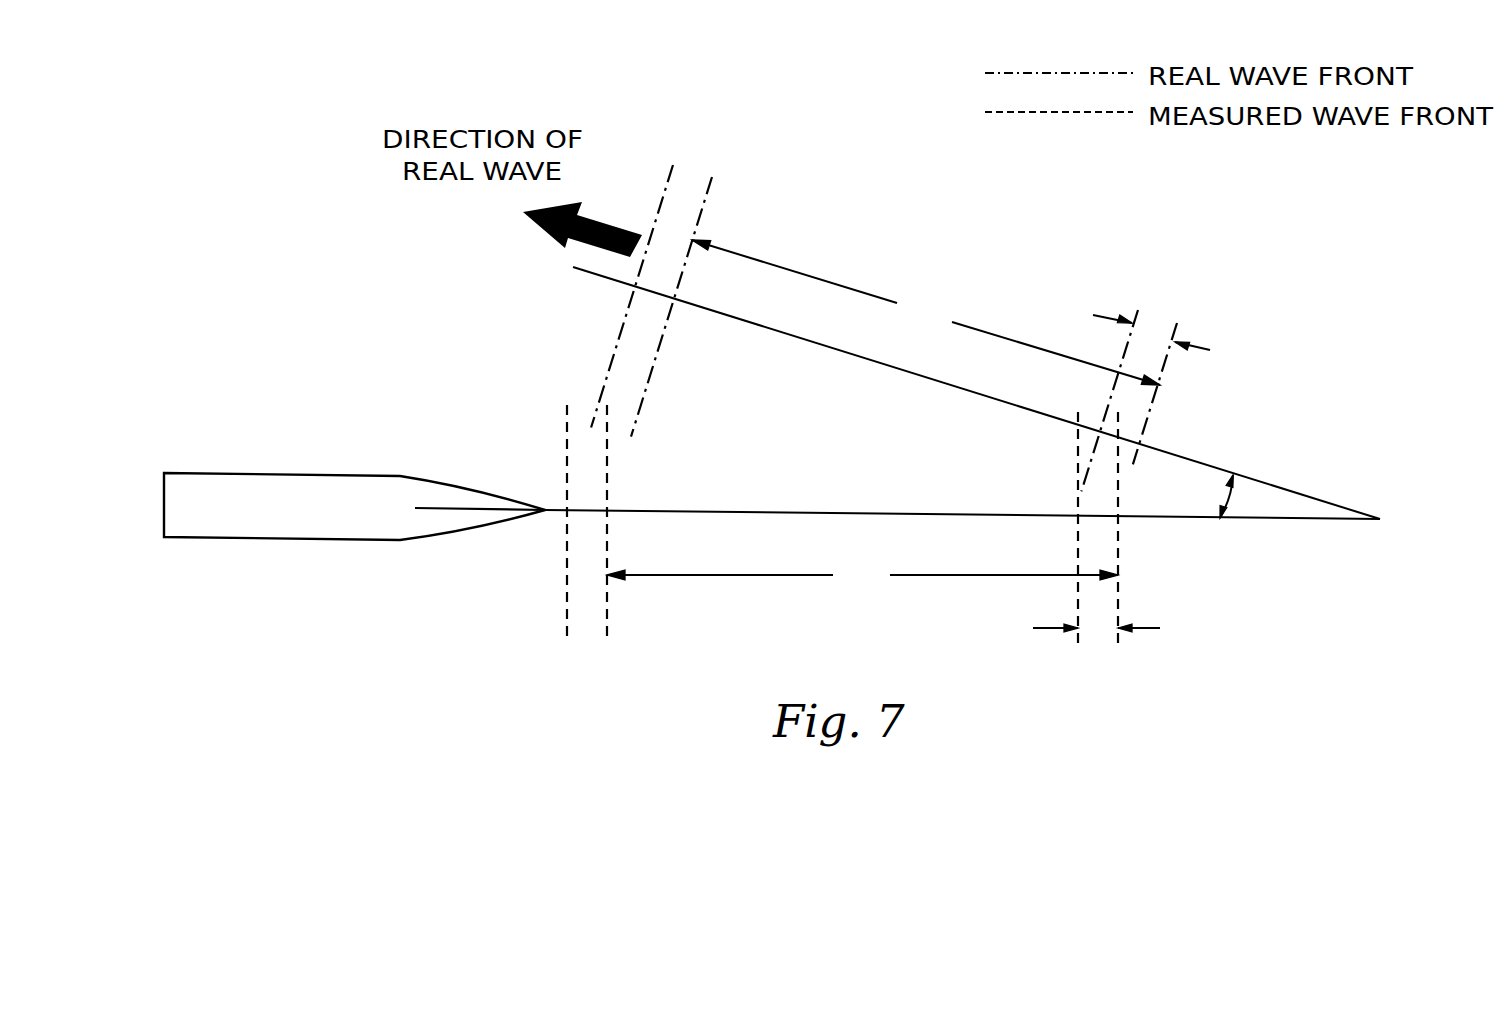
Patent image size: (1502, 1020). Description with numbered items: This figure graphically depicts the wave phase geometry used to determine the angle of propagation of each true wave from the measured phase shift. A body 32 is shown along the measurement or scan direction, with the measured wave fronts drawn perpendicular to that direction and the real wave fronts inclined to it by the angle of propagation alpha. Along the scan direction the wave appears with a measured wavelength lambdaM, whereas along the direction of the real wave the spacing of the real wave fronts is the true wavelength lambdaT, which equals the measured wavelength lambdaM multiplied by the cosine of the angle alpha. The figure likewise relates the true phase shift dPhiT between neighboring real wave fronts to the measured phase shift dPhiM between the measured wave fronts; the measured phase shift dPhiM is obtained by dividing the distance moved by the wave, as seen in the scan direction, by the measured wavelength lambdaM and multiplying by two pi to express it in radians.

The missile 32 is at (258, 460).
The true wavelength lambdaT is at (926, 312).
The measured wavelength lambdaM is at (862, 580).
The true phase difference dPhiT is at (1151, 311).
The measured phase shift dPhiM is at (1096, 658).
The angle of propagation alpha is at (1208, 491).